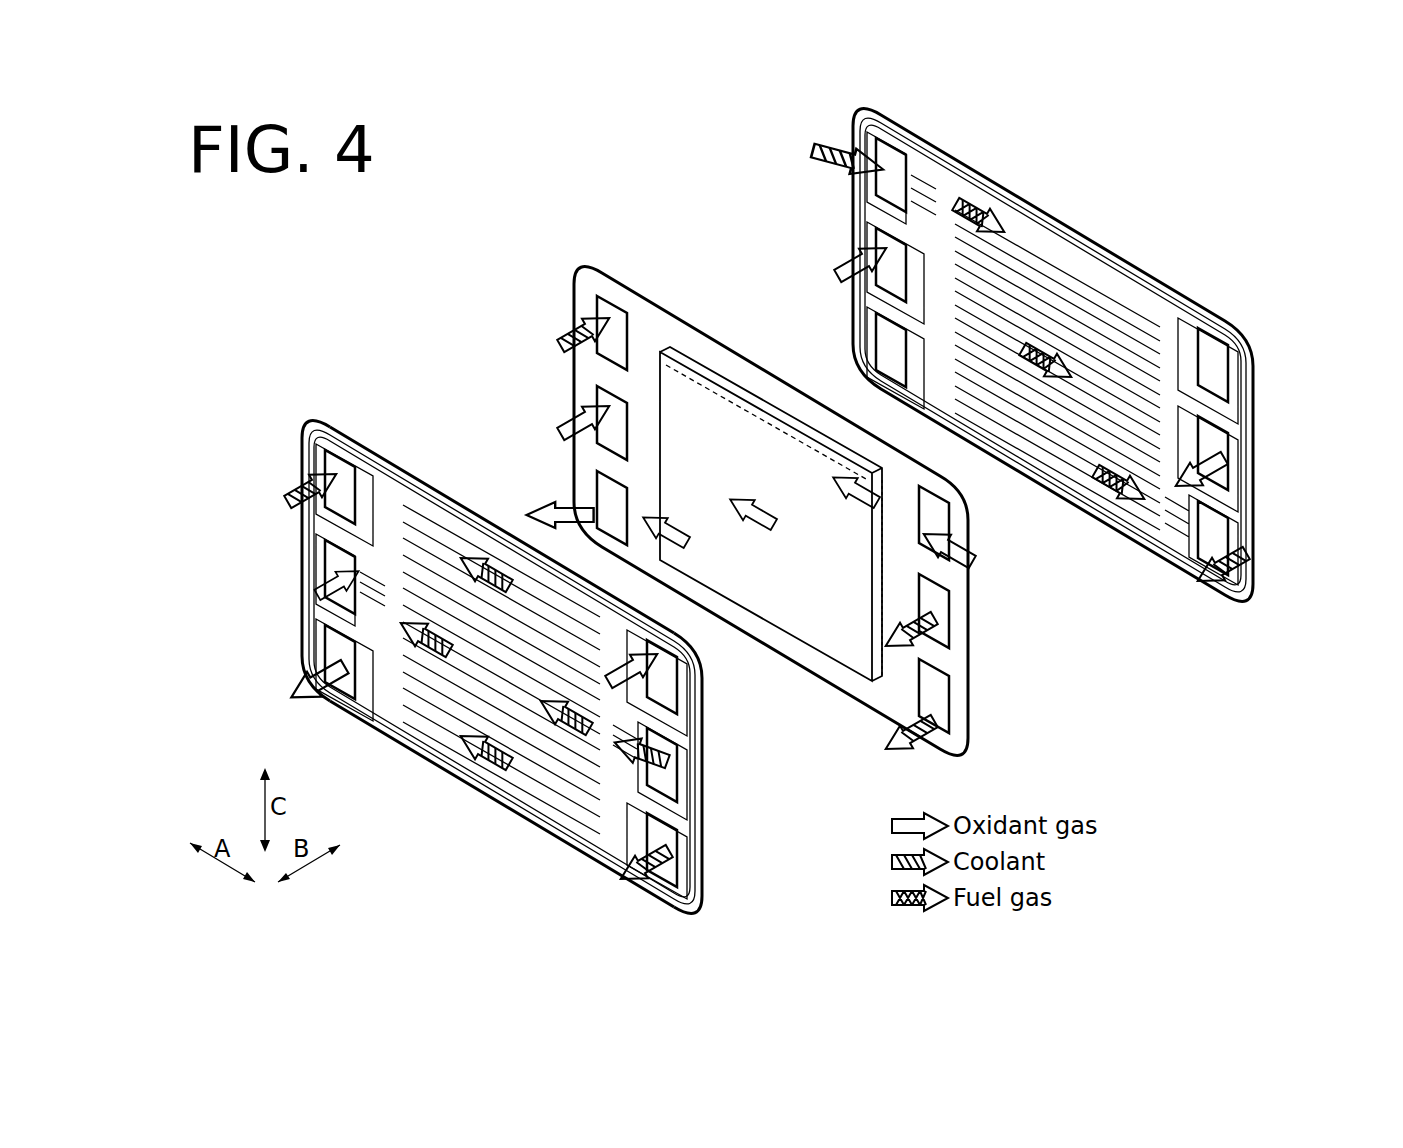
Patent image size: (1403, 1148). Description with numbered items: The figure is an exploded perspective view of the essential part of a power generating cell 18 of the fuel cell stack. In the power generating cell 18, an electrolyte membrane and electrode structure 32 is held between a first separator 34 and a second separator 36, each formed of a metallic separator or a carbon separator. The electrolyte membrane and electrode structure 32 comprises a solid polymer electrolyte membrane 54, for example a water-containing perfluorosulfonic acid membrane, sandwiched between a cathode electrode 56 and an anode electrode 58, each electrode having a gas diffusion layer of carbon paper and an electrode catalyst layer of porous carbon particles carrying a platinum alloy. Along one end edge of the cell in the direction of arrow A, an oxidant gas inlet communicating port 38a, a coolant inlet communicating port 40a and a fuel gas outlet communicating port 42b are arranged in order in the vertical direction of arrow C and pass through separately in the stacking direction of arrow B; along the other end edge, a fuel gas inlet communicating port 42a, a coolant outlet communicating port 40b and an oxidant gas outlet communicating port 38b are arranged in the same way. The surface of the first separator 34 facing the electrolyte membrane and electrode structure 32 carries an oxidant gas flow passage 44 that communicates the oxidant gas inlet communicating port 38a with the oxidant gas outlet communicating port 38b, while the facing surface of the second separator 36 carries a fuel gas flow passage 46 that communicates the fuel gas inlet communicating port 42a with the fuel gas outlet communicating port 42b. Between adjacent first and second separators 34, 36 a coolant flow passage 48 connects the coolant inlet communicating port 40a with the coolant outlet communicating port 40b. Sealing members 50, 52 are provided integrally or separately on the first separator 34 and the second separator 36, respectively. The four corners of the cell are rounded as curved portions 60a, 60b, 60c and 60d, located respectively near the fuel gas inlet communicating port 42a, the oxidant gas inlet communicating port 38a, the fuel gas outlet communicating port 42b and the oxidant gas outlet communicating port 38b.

The power generating cell 18 is at (414, 301).
The electrolyte membrane and electrode structure 32 is at (574, 268).
The first separator 34 is at (312, 428).
The second separator 36 is at (854, 127).
The oxidant gas inlet communicating port 38a is at (665, 690).
The oxidant gas outlet communicating port 38b is at (330, 648).
The coolant inlet communicating port 40a is at (668, 776).
The coolant outlet communicating port 40b is at (330, 562).
The fuel gas inlet communicating port 42a is at (330, 468).
The fuel gas outlet communicating port 42b is at (665, 853).
The oxidant gas flow passage 44 is at (522, 745).
The fuel gas flow passage 46 is at (1082, 455).
The coolant flow passage 48 is at (430, 713).
The sealing member 50 is at (386, 478).
The sealing member 52 is at (1085, 245).
The solid polymer electrolyte membrane 54 is at (670, 330).
The cathode electrode 56 is at (705, 400).
The anode electrode 58 is at (745, 385).
The curved portion 60a is at (320, 425).
The curved portion 60b is at (700, 665).
The curved portion 60c is at (702, 906).
The curved portion 60d is at (308, 673).